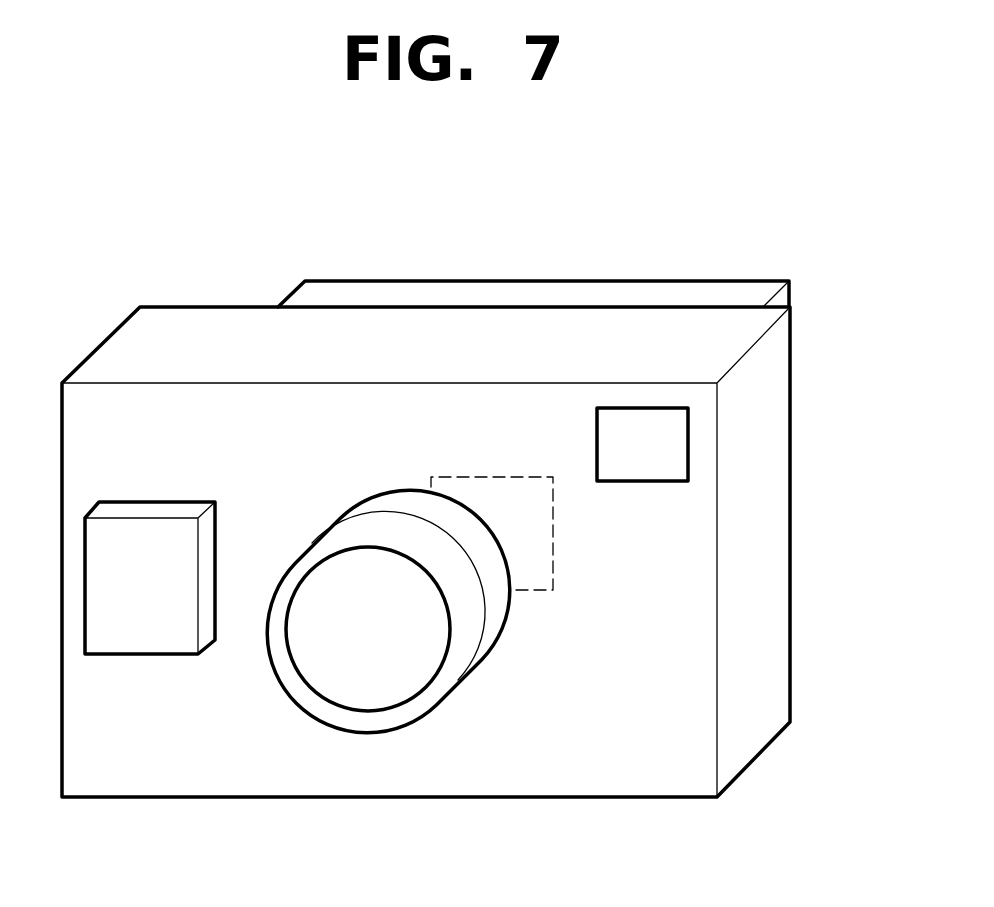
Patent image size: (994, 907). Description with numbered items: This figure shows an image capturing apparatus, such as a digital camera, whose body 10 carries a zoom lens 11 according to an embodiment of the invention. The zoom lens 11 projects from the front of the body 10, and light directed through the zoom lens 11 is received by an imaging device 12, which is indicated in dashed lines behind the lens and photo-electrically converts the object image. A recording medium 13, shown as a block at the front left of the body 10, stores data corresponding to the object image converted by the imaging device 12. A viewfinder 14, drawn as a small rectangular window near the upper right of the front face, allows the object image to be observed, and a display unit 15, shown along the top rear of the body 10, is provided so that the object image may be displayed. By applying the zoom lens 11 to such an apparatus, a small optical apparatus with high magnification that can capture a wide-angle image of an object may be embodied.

The camera body 10 is at (652, 772).
The zoom lens 11 is at (368, 695).
The imaging device 12 is at (537, 585).
The recording medium 13 is at (155, 643).
The viewfinder 14 is at (680, 447).
The display unit 15 is at (620, 287).